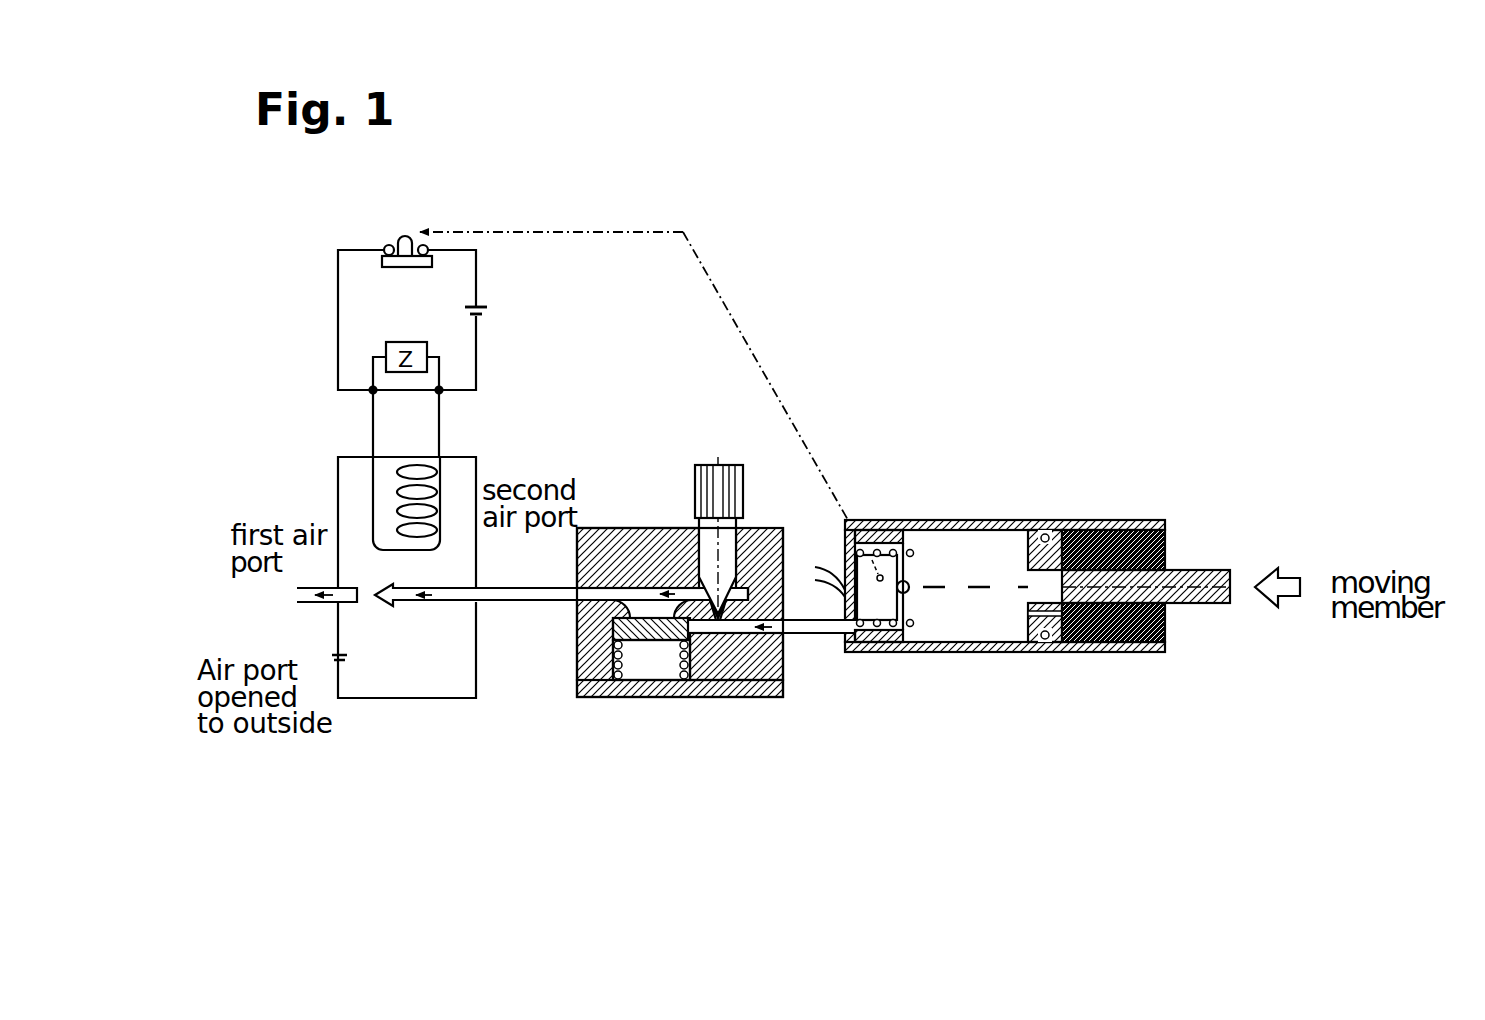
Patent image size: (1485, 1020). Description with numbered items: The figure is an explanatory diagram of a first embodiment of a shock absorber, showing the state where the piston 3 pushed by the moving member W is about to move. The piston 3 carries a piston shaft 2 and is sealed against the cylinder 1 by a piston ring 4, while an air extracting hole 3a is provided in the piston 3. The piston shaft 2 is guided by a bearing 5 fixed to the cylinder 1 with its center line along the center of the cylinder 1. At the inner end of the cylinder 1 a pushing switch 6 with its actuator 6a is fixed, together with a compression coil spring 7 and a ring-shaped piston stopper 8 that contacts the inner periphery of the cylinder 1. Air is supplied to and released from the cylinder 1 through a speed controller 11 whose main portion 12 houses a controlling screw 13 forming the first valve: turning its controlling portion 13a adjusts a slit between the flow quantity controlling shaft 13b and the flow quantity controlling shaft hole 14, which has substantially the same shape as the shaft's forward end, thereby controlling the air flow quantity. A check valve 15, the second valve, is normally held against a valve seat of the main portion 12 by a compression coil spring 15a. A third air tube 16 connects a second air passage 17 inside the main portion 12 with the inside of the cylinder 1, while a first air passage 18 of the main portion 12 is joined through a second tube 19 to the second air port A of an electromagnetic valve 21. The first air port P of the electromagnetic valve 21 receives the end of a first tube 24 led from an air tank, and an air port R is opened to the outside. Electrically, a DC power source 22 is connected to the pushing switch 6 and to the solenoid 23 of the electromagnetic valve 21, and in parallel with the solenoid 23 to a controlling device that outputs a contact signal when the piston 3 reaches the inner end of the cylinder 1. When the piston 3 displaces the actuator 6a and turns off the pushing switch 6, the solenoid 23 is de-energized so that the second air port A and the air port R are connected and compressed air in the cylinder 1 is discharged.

The cylinder 1 is at (917, 520).
The piston shaft 2 is at (1198, 570).
The piston 3 is at (1033, 533).
The air extracting hole 3a is at (1092, 653).
The piston ring 4 is at (1053, 653).
The bearing 5 is at (1108, 528).
The pushing switch 6 is at (415, 232).
The actuator 6a is at (403, 235).
The compression coil spring 7 is at (873, 653).
The piston stopper 8 is at (893, 653).
The speed controller 11 is at (620, 520).
The main portion of the speed controller 12 is at (740, 688).
The controlling screw 13 is at (745, 525).
The controlling portion 13a is at (722, 482).
The flow quantity controlling shaft 13b is at (757, 543).
The flow quantity controlling shaft hole 14 is at (718, 617).
The check valve 15 is at (645, 640).
The compression coil spring 15a is at (600, 695).
The third air tube 16 is at (808, 622).
The second air passage 17 is at (740, 622).
The first air passage 18 is at (573, 613).
The second tube 19 is at (503, 602).
The electromagnetic valve 21 is at (338, 480).
The DC power source 22 is at (483, 315).
The solenoid 23 is at (437, 490).
The first tube 24 is at (300, 600).
The first air port P is at (346, 585).
The second air port A is at (483, 578).
The air port opened to outside R is at (322, 655).
The moving member W is at (1281, 579).